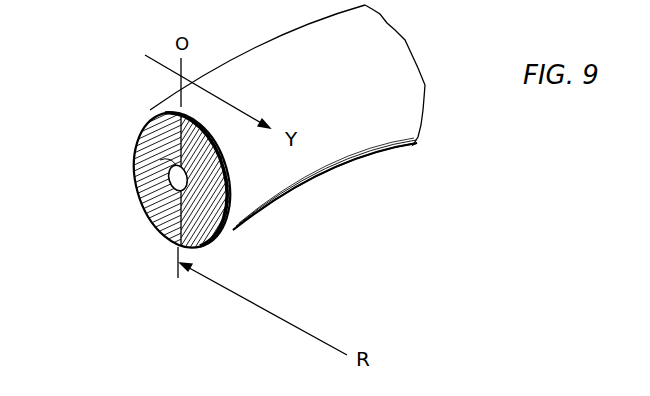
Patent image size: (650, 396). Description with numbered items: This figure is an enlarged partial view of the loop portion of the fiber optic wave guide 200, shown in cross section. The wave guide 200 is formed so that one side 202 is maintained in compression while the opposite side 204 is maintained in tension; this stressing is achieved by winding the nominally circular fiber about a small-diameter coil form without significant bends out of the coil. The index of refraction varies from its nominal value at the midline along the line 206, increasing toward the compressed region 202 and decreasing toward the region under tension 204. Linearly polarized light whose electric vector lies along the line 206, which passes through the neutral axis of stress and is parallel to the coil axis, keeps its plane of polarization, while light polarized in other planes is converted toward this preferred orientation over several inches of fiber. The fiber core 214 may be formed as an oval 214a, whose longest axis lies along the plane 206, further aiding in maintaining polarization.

The fiber optic wave guide 200 is at (125, 102).
The compressed side 202 is at (237, 230).
The tension side 204 is at (137, 162).
The fiber core 214 is at (166, 186).
The oval core shape 214a is at (172, 162).
The neutral axis of stress 206 is at (177, 248).